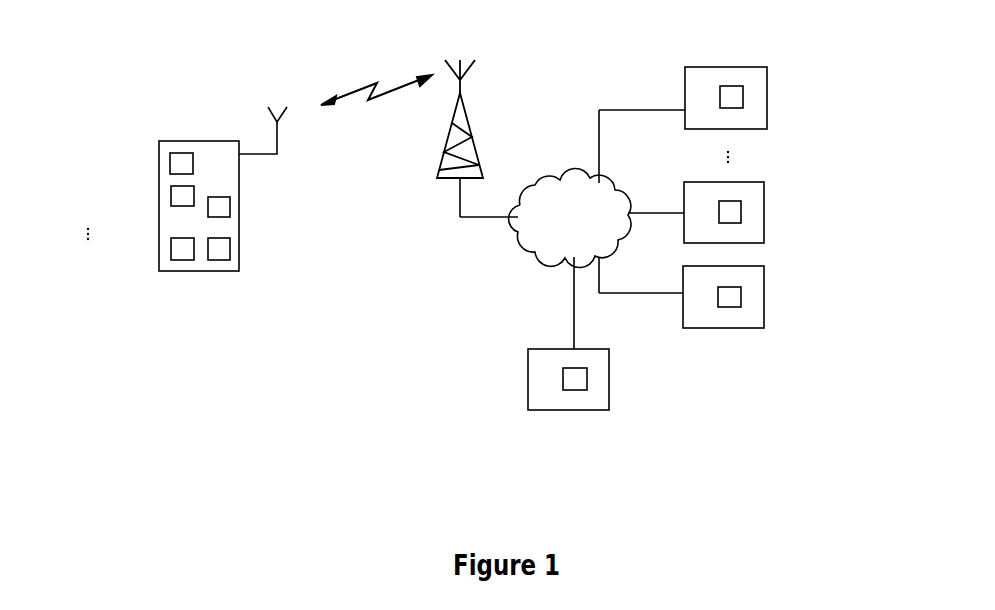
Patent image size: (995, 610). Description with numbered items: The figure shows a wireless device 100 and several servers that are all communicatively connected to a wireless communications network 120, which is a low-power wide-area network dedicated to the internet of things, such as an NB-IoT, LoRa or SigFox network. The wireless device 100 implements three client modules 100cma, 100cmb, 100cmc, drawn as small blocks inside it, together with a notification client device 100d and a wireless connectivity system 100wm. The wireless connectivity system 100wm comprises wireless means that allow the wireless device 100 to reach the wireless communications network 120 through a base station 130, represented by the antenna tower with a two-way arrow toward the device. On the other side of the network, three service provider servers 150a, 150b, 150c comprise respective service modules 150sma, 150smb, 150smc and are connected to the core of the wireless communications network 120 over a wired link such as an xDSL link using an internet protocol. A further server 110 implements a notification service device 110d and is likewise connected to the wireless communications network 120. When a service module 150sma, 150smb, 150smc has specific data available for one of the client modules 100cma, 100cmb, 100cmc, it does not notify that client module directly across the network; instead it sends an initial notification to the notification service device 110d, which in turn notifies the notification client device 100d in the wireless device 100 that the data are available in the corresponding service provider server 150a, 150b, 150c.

The wireless device 100 is at (207, 140).
The client module 100cma is at (170, 162).
The client module 100cmb is at (171, 197).
The client module 100cmc is at (171, 250).
The notification client device 100d is at (230, 208).
The wireless connectivity system 100wm is at (218, 260).
The base station 130 is at (470, 110).
The wireless communications network 120 is at (592, 230).
The service provider server 150c is at (767, 76).
The service module 150smc is at (743, 97).
The service provider server 150b is at (764, 199).
The service module 150smb is at (741, 213).
The service provider server 150a is at (764, 297).
The service module 150sma is at (729, 307).
The server 110 is at (535, 410).
The notification service device 110d is at (578, 390).